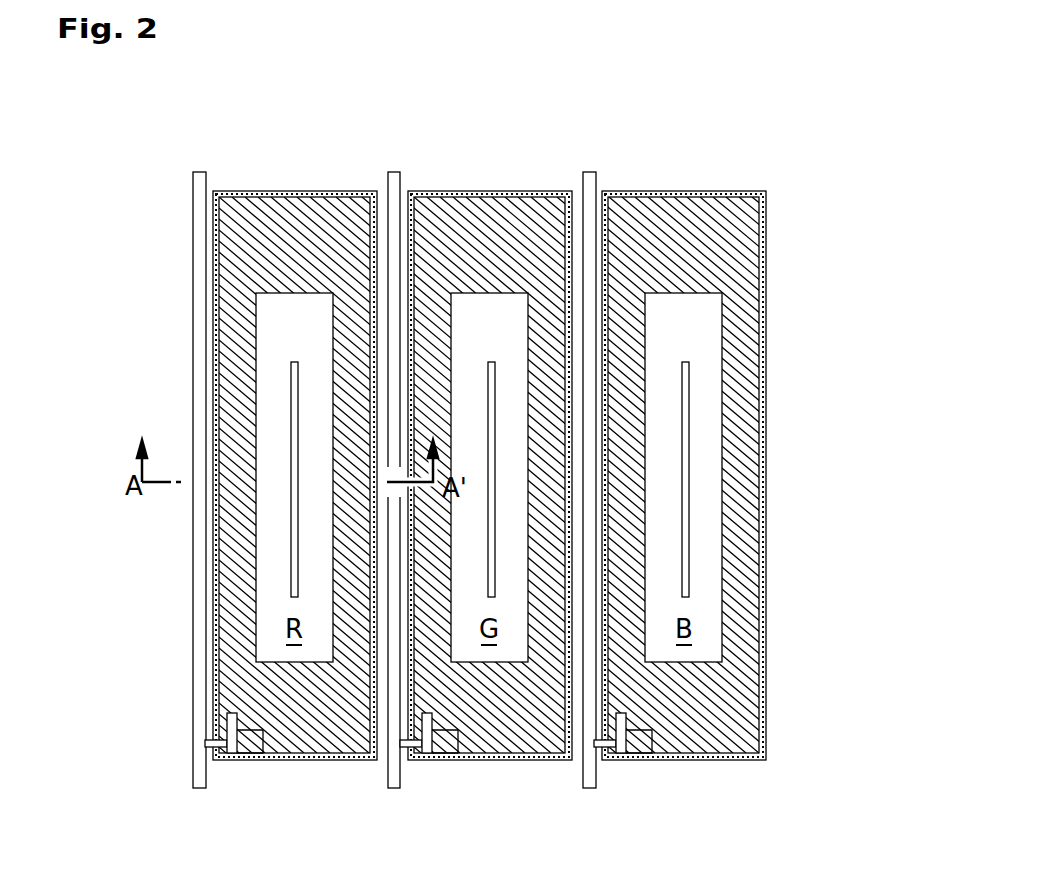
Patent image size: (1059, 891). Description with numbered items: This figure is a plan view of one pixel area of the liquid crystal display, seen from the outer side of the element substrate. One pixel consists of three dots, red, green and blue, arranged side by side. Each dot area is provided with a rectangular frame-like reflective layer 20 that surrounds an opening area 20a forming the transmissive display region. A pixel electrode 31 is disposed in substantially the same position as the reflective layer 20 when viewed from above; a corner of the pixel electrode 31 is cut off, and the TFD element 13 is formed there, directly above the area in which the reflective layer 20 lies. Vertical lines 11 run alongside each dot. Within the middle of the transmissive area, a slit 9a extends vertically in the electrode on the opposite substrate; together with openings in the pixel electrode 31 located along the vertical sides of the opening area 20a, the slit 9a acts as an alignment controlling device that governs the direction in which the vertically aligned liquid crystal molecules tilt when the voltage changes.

The data line 11 is at (195, 316).
The TFD element 13 is at (240, 768).
The reflective layer 20 is at (287, 192).
The opening area 20a is at (275, 390).
The slit 9a is at (290, 524).
The pixel electrode 31 is at (245, 243).